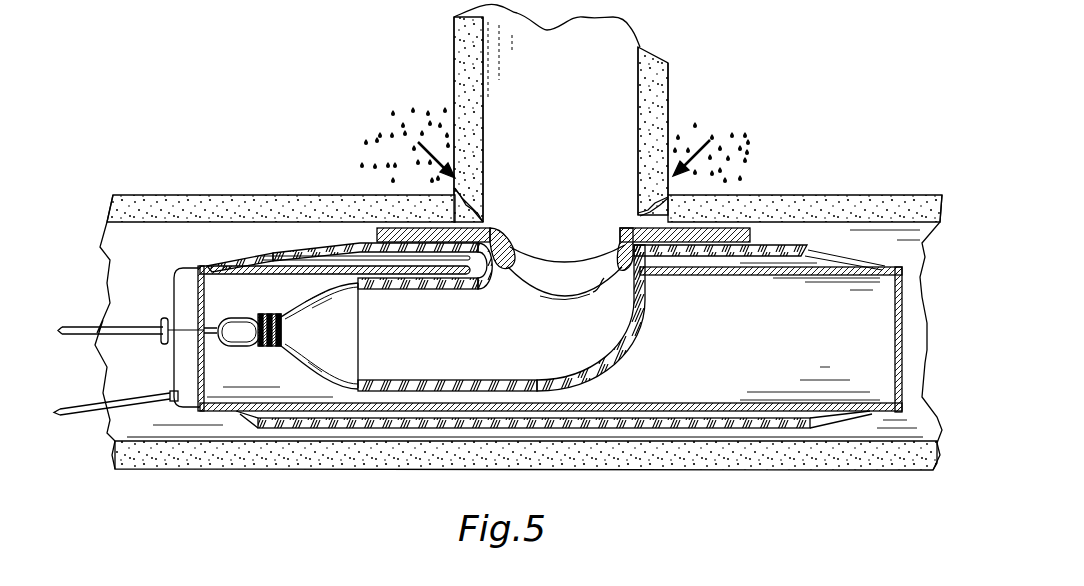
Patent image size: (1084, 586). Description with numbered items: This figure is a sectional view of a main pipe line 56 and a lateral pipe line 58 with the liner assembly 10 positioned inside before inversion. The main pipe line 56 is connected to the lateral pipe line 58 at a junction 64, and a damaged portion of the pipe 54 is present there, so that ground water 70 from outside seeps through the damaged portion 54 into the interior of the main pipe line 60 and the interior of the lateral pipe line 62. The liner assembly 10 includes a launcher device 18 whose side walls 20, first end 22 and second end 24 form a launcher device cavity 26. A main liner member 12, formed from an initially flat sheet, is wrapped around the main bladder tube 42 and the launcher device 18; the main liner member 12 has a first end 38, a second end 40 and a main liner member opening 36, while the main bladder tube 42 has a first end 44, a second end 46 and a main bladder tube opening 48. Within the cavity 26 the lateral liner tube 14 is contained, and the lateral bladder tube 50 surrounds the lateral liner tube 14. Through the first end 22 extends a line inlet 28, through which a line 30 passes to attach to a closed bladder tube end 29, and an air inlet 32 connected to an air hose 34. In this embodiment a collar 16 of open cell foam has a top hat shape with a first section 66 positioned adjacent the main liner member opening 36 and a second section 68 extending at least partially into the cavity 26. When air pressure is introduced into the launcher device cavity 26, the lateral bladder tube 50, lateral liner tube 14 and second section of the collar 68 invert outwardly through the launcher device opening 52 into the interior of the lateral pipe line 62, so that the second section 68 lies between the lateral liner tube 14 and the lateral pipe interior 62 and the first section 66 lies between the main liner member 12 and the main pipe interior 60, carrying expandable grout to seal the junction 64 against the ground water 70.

The liner assembly 10 is at (112, 261).
The main liner member 12 is at (372, 232).
The lateral liner tube 14 is at (450, 291).
The collar 16 is at (596, 296).
The launcher device 18 is at (178, 270).
The side walls 20 is at (270, 263).
The first end 22 is at (185, 365).
The second end 24 is at (900, 343).
The launcher device cavity 26 is at (863, 367).
The line inlet 28 is at (165, 322).
The closed bladder tube end 29 is at (263, 317).
The line 30 is at (117, 334).
The air inlet 32 is at (172, 405).
The air hose 34 is at (100, 427).
The main liner member opening 36 is at (547, 240).
The first end 38 is at (305, 243).
The second end 40 is at (807, 247).
The main bladder tube 42 is at (253, 257).
The first end 44 is at (200, 267).
The second end 46 is at (920, 285).
The main bladder tube opening 48 is at (570, 243).
The lateral bladder tube 50 is at (307, 300).
The launcher device opening 52 is at (645, 280).
The damaged portion of the pipe 54 is at (460, 188).
The main pipe line 56 is at (883, 195).
The lateral pipe line 58 is at (668, 95).
The interior of the main pipe line 60 is at (922, 248).
The interior of the lateral pipe line 62 is at (638, 92).
The junction 64 is at (486, 216).
The first section of the collar 66 is at (632, 233).
The second section of the collar 68 is at (547, 294).
The ground water 70 is at (417, 148).